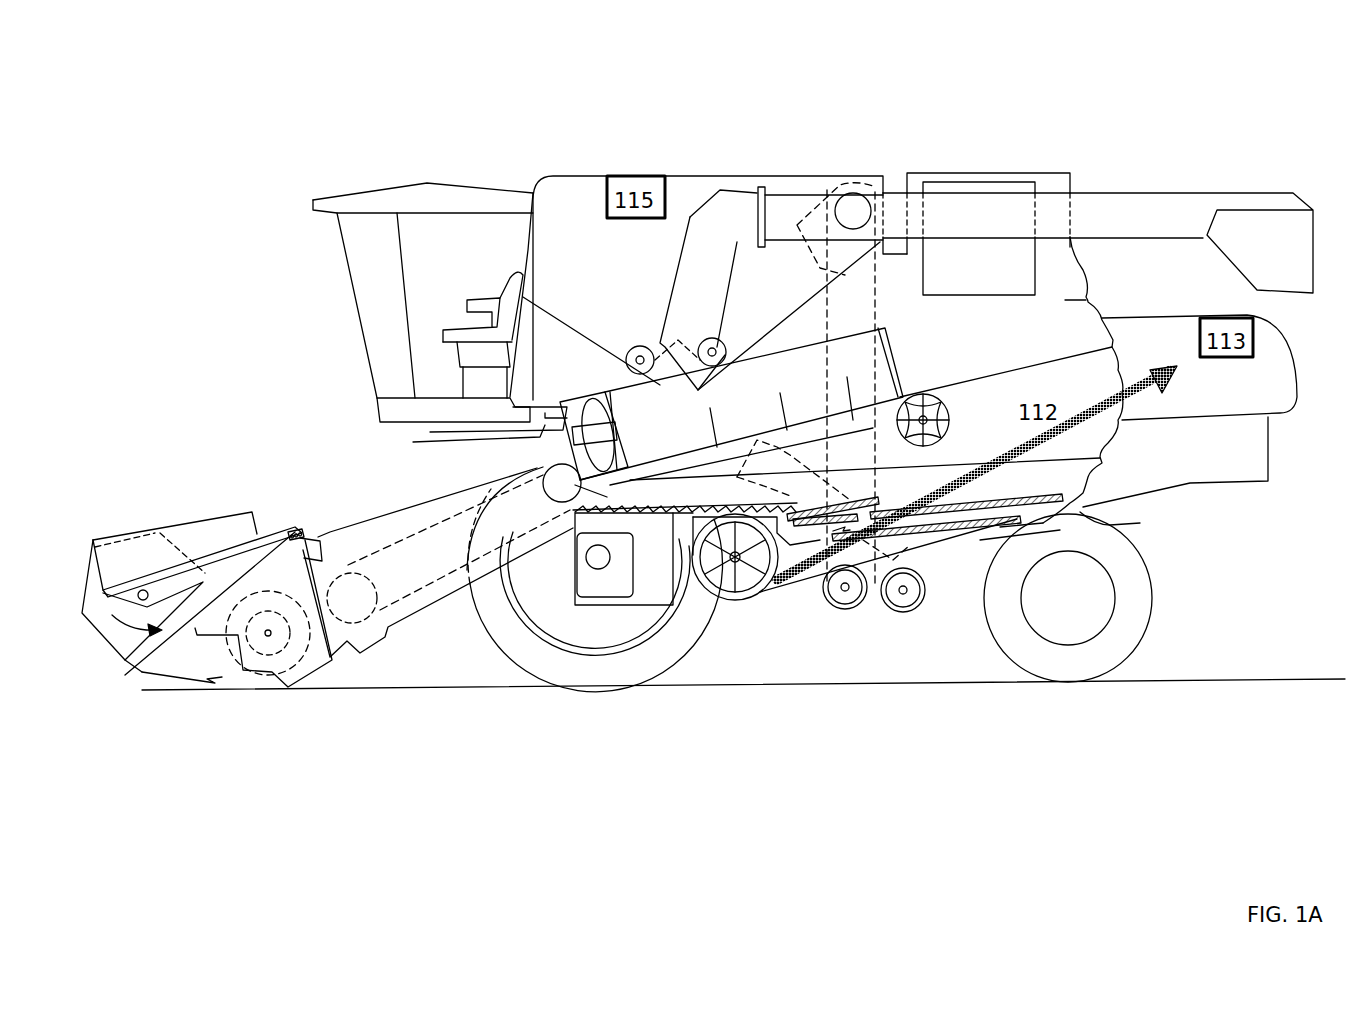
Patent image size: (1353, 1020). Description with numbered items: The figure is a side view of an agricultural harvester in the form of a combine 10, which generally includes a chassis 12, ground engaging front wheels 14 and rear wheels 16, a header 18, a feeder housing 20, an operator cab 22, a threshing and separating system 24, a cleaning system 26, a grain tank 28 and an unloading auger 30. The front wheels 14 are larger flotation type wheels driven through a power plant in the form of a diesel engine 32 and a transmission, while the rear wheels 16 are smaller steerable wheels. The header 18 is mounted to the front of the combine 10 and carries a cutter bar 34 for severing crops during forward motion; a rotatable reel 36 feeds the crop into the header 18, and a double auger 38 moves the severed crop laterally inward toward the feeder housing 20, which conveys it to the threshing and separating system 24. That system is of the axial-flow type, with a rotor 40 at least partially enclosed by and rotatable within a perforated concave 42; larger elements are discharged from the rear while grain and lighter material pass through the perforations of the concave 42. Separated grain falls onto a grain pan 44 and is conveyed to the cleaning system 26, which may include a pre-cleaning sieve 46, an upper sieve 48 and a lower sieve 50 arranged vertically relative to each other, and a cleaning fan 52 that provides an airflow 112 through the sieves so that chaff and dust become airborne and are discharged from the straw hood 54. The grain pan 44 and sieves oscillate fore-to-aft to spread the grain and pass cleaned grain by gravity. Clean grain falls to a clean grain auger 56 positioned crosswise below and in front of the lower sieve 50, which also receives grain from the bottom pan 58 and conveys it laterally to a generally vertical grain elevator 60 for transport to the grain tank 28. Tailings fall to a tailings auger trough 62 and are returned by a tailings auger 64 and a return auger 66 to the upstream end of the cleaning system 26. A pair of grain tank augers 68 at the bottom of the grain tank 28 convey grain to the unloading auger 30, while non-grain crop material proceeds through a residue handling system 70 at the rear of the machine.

The combine 10 is at (414, 168).
The chassis 12 is at (1140, 523).
The front wheels 14 is at (500, 640).
The rear wheels 16 is at (1153, 620).
The header 18 is at (178, 514).
The feeder housing 20 is at (400, 520).
The operator cab 22 is at (345, 285).
The threshing and separating system 24 is at (508, 450).
The cleaning system 26 is at (797, 598).
The grain tank 28 is at (588, 183).
The unloading auger 30 is at (1163, 197).
The diesel engine 32 is at (967, 185).
The cutter bar 34 is at (200, 686).
The rotatable reel 36 is at (88, 583).
The double auger 38 is at (270, 658).
The rotor 40 is at (582, 402).
The perforated concave 42 is at (773, 378).
The grain pan 44 is at (568, 533).
The pre-cleaning sieve 46 is at (890, 503).
The upper sieve 48 is at (985, 507).
The lower sieve 50 is at (965, 525).
The cleaning fan 52 is at (735, 600).
The straw hood 54 is at (1278, 357).
The clean grain auger 56 is at (846, 610).
The bottom pan 58 is at (1000, 545).
The grain elevator 60 is at (885, 300).
The tailings auger trough 62 is at (955, 535).
The tailings auger 64 is at (903, 612).
The return auger 66 is at (818, 480).
The grain tank augers 68 is at (633, 350).
The residue handling system 70 is at (1237, 494).
The airflow 112 is at (977, 473).